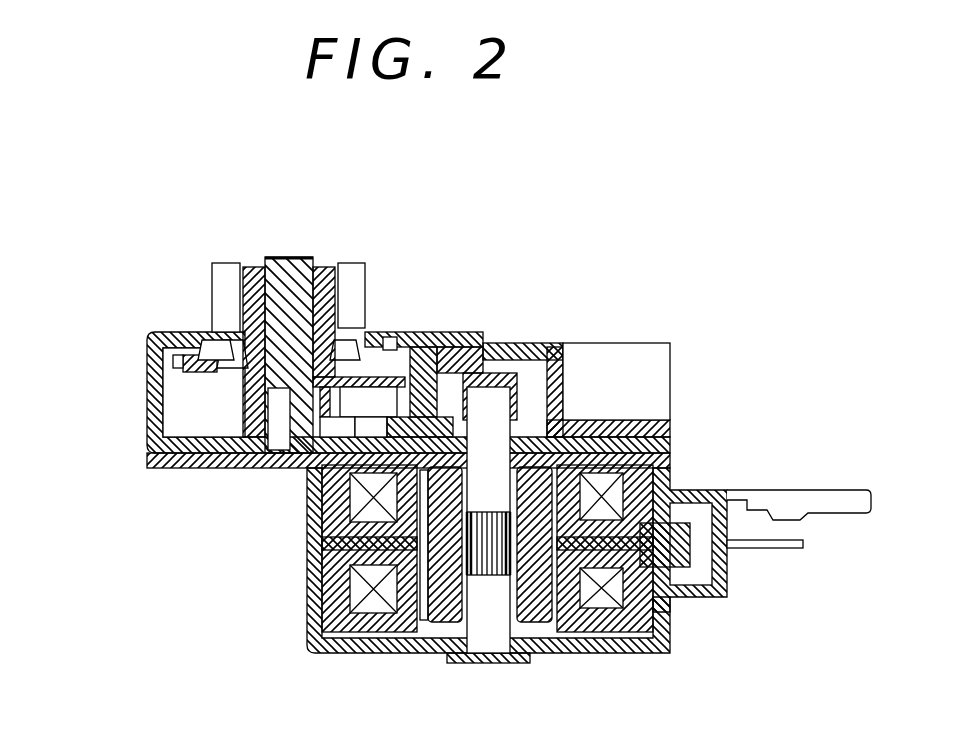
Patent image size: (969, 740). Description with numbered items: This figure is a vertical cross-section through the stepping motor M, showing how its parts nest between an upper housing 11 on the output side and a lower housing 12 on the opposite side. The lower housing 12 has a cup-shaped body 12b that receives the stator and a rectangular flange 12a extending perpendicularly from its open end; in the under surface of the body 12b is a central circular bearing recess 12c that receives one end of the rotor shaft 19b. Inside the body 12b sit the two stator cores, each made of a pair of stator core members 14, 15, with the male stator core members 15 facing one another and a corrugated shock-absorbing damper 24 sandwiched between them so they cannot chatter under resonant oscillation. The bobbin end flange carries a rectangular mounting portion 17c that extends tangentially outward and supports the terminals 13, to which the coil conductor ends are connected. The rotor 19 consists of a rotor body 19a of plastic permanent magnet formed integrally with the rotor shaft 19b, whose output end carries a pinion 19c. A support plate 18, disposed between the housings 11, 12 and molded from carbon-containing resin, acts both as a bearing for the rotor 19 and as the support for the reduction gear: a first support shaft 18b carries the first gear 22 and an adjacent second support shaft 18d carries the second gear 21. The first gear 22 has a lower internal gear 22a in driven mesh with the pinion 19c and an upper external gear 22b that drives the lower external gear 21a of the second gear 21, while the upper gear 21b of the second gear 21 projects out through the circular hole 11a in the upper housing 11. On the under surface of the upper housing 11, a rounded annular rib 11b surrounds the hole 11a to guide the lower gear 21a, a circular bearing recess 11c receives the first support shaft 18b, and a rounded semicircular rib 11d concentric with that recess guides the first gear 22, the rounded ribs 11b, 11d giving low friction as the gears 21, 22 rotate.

The stepping motor M is at (714, 317).
The upper housing 11 is at (580, 345).
The circular hole 11a is at (352, 262).
The annular projection or rib 11b is at (203, 333).
The circular bearing recess 11c is at (488, 340).
The semicircular rib 11d is at (550, 343).
The lower housing 12 is at (672, 626).
The rectangular flange 12a is at (202, 471).
The cup-shaped body 12b is at (318, 655).
The central circular bearing recess 12c is at (506, 655).
The terminals 13 is at (805, 545).
The stator core member 14 is at (307, 473).
The male stator core member 15 is at (320, 537).
The mounting portion 17c is at (690, 558).
The support plate 18 is at (150, 445).
The first support shaft 18b is at (440, 345).
The second support shaft 18d is at (300, 257).
The rotor 19 is at (432, 653).
The rotor body 19a is at (565, 650).
The rotor shaft 19b is at (483, 635).
The pinion 19c is at (565, 348).
The second gear 21 is at (128, 163).
The lower gear 21a is at (183, 330).
The upper gear 21b is at (228, 262).
The first gear 22 is at (545, 232).
The lower gear 22a is at (500, 372).
The upper gear 22b is at (476, 350).
The damper 24 is at (320, 550).